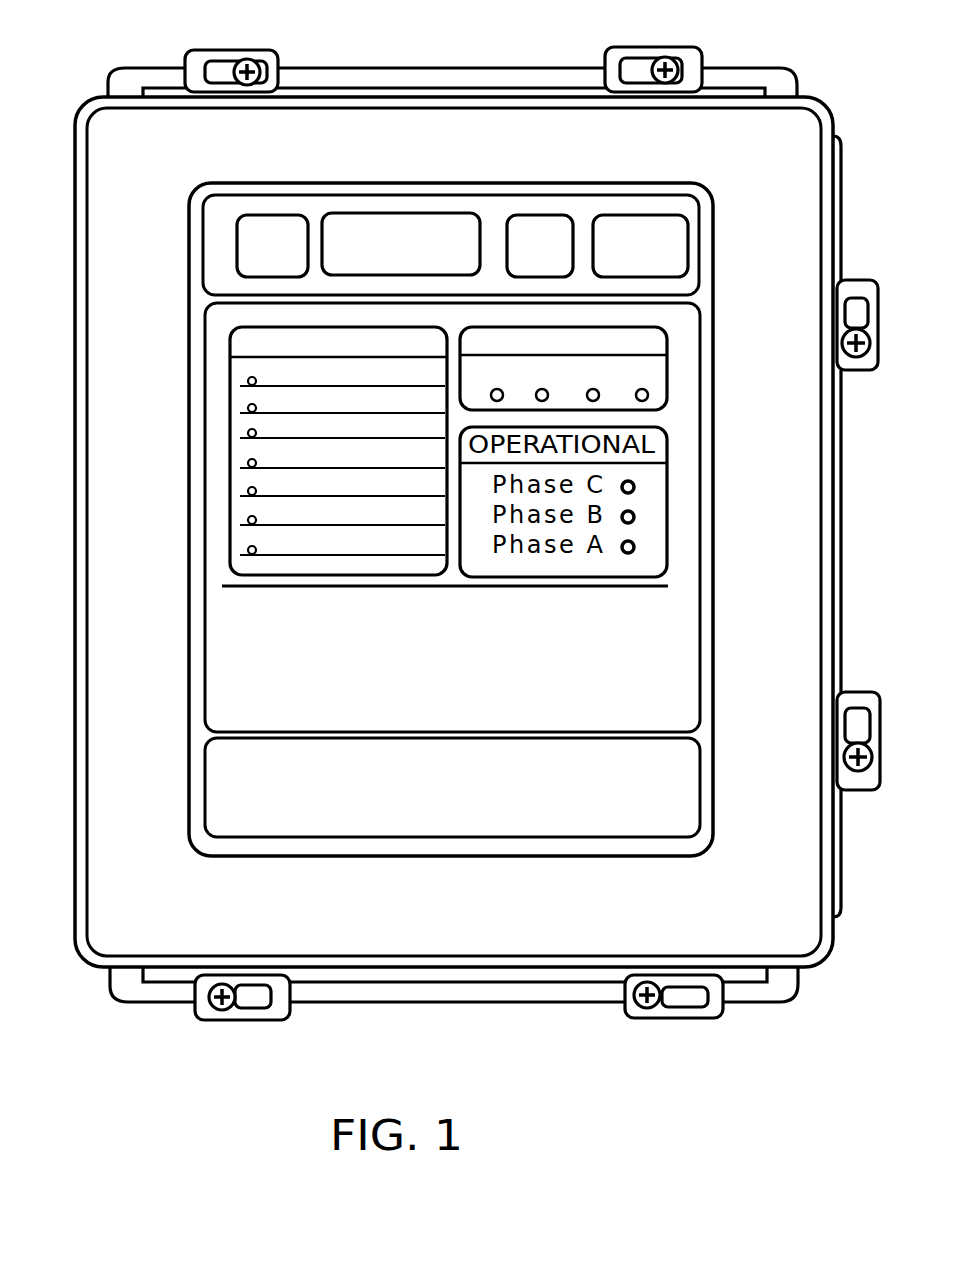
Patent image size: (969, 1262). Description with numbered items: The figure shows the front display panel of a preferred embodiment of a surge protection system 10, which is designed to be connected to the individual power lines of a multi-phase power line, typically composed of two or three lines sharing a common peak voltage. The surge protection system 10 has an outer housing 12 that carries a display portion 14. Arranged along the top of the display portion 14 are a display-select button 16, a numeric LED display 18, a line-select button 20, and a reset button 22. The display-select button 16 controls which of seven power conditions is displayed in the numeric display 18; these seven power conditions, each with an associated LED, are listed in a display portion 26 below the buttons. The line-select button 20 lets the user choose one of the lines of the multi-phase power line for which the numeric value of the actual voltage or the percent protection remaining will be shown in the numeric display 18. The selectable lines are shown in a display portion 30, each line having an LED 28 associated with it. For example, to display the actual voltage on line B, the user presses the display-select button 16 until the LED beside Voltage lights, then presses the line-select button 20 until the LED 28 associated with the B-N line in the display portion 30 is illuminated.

The surge protection system 10 is at (118, 64).
The outer housing 12 is at (97, 375).
The display portion 14 is at (180, 188).
The display-select button 16 is at (297, 218).
The numeric LED display 18 is at (442, 220).
The line-select button 20 is at (545, 220).
The reset button 22 is at (652, 220).
The display portion 26 is at (230, 556).
The LED 28 is at (648, 395).
The display portion 30 is at (609, 363).